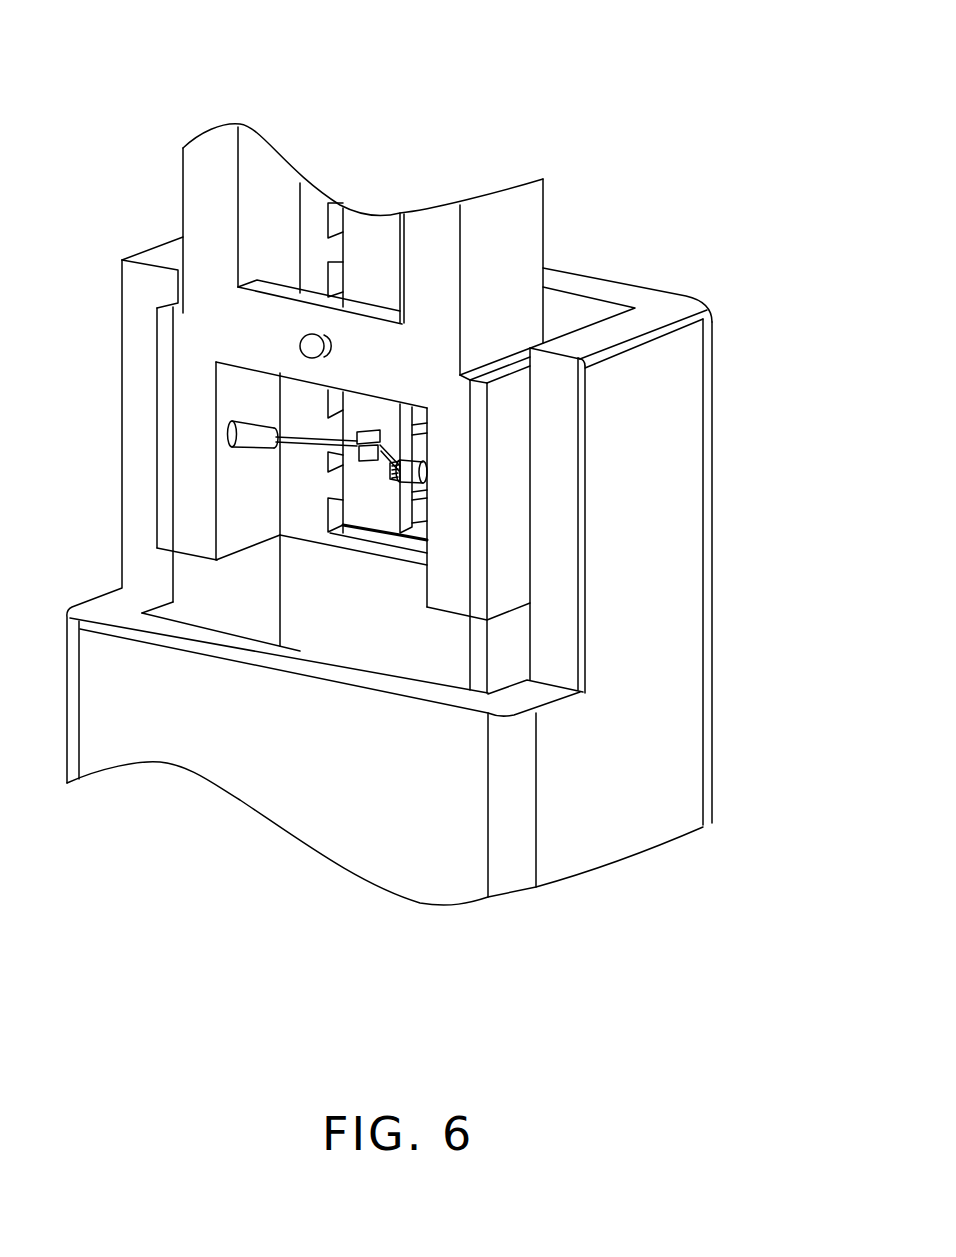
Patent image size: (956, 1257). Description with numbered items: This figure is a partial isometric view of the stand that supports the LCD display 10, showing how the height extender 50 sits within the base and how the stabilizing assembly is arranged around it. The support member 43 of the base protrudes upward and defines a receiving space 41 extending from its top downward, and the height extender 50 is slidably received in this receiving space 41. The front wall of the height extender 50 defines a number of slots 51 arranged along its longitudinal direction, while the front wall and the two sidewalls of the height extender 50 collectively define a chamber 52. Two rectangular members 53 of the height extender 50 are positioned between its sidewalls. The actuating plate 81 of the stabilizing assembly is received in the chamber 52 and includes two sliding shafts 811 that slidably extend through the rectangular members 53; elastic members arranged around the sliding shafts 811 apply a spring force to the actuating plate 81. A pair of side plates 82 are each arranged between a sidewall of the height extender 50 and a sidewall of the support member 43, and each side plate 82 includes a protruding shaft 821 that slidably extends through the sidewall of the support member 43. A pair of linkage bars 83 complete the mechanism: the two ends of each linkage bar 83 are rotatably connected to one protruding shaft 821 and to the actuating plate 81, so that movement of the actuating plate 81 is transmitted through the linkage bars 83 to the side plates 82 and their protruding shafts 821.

The LCD display 10 is at (128, 58).
The receiving space 41 is at (570, 308).
The support member 43 is at (657, 657).
The height extender 50 is at (310, 513).
The slots 51 is at (335, 512).
The chamber 52 is at (253, 202).
The rectangular members 53 is at (257, 313).
The actuating plate 81 is at (370, 240).
The sliding shafts 811 is at (310, 347).
The side plates 82 is at (167, 393).
The protruding shaft 821 is at (230, 428).
The linkage bars 83 is at (305, 448).